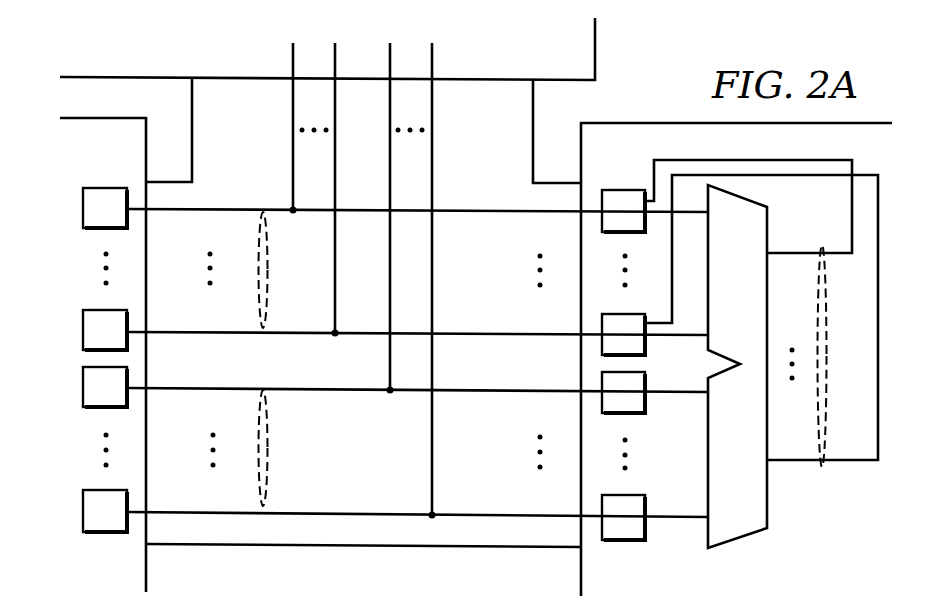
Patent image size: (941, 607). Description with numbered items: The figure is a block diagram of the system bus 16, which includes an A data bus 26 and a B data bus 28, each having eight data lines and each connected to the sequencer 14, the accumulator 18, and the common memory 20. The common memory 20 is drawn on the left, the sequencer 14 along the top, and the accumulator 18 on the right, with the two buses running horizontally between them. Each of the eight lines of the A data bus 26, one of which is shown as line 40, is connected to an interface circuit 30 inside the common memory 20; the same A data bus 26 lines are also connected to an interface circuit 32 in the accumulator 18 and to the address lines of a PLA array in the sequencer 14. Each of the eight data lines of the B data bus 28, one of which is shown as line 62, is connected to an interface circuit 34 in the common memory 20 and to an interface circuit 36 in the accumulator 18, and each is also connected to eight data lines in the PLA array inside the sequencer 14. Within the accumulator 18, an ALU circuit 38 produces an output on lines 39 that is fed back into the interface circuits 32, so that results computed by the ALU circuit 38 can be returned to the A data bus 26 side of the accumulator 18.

The sequencer 14 is at (327, 49).
The system bus 16 is at (363, 336).
The accumulator 18 is at (736, 359).
The common memory 20 is at (103, 355).
The A data bus 26 is at (290, 296).
The B data bus 28 is at (240, 425).
The interface circuit 30 is at (81, 257).
The interface circuit 32 is at (740, 302).
The interface circuit 34 is at (81, 438).
The interface circuit 36 is at (650, 466).
The ALU circuit 38 is at (762, 366).
The lines 39 is at (847, 356).
The line 40 is at (417, 250).
The line 62 is at (417, 431).